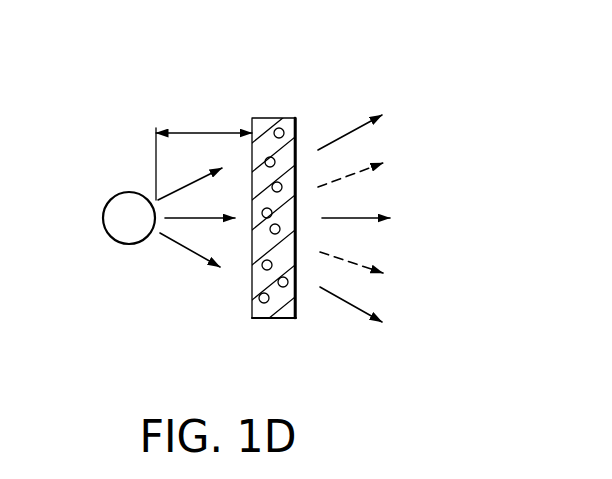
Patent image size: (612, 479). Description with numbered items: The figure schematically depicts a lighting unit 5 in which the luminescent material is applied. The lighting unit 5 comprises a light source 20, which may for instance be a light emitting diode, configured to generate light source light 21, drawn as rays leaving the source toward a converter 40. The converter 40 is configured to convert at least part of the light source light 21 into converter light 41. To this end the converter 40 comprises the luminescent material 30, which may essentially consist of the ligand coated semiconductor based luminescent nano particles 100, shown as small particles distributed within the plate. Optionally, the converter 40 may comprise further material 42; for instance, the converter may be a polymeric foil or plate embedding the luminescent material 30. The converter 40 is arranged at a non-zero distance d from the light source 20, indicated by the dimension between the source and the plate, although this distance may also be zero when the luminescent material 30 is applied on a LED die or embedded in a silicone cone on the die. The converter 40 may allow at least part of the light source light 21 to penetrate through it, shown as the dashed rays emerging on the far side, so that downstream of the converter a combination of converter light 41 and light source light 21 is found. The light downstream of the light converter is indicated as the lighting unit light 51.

The lighting unit 5 is at (217, 102).
The light source 20 is at (102, 232).
The light source light 21 is at (180, 248).
The luminescent material 30 is at (252, 265).
The ligand coated semiconductor based luminescent nano particles 100 is at (264, 218).
The converter 40 is at (283, 327).
The converter light 41 is at (345, 132).
The further material 42 is at (297, 317).
The lighting unit light 51 is at (367, 333).